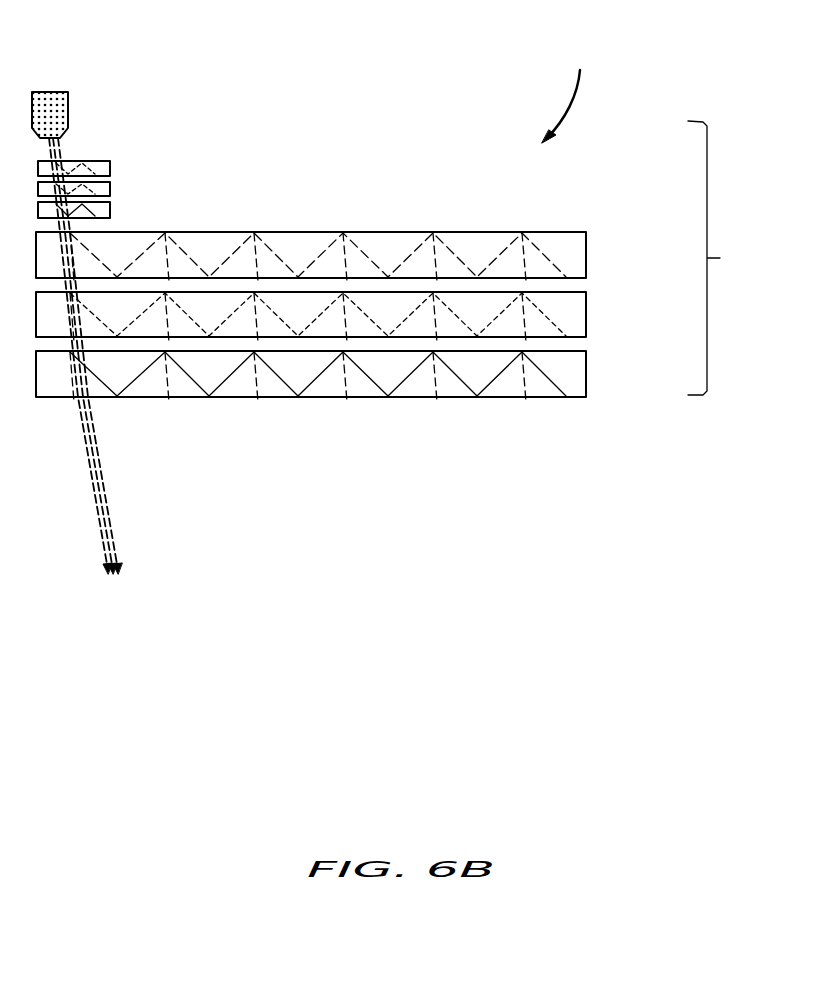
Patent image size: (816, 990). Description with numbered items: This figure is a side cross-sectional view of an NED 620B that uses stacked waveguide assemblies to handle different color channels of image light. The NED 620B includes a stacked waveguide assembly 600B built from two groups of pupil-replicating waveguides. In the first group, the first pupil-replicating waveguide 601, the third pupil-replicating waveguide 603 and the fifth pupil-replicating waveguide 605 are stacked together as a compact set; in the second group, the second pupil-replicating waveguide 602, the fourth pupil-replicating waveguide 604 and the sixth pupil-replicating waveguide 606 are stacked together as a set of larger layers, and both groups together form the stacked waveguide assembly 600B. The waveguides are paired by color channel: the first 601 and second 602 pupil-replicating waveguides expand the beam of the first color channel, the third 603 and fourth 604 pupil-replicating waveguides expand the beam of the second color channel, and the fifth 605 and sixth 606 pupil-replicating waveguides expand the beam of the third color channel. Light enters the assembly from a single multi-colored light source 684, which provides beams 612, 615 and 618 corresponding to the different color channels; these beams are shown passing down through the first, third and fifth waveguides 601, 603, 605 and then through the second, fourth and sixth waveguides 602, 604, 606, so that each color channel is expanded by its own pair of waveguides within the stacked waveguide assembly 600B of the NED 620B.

The multi-colored light source 684 is at (45, 92).
The first pupil-replicating waveguide 601 is at (110, 165).
The third pupil-replicating waveguide 603 is at (110, 188).
The fifth pupil-replicating waveguide 605 is at (110, 207).
The second pupil-replicating waveguide 602 is at (586, 252).
The fourth pupil-replicating waveguide 604 is at (586, 309).
The sixth pupil-replicating waveguide 606 is at (586, 366).
The stacked waveguide assembly 600B is at (739, 258).
The NED 620B is at (577, 93).
The beam 615 is at (102, 473).
The beam 618 is at (80, 356).
The beam 612 is at (111, 356).